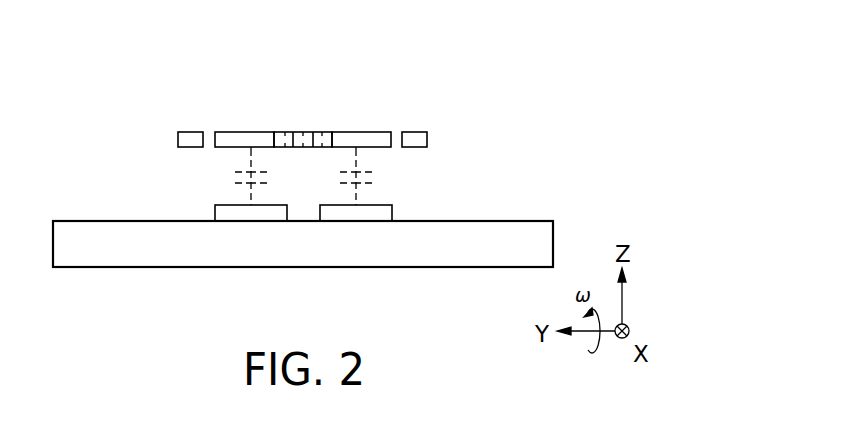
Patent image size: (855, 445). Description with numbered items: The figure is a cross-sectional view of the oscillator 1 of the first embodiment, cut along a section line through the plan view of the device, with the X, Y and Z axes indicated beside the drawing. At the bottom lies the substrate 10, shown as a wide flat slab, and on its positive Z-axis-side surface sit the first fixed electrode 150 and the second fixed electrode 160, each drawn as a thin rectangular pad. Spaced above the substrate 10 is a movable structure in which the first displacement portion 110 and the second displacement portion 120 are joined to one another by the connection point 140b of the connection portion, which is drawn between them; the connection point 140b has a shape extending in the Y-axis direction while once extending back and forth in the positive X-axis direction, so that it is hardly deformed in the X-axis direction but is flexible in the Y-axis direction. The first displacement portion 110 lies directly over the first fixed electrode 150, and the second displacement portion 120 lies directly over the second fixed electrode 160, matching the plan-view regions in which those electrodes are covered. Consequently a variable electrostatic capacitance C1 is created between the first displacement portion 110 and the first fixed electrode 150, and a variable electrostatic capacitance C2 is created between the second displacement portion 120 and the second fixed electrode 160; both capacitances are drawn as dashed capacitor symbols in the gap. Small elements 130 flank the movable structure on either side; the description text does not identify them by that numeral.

The oscillator 1 is at (326, 100).
The substrate 10 is at (522, 221).
The first displacement portion 110 is at (248, 132).
The second displacement portion 120 is at (362, 132).
The fixed portion 130 is at (192, 132).
The connection point 140b is at (306, 132).
The first fixed electrode 150 is at (215, 218).
The second fixed electrode 160 is at (392, 218).
The electrostatic capacitance C1 is at (233, 176).
The electrostatic capacitance C2 is at (374, 176).